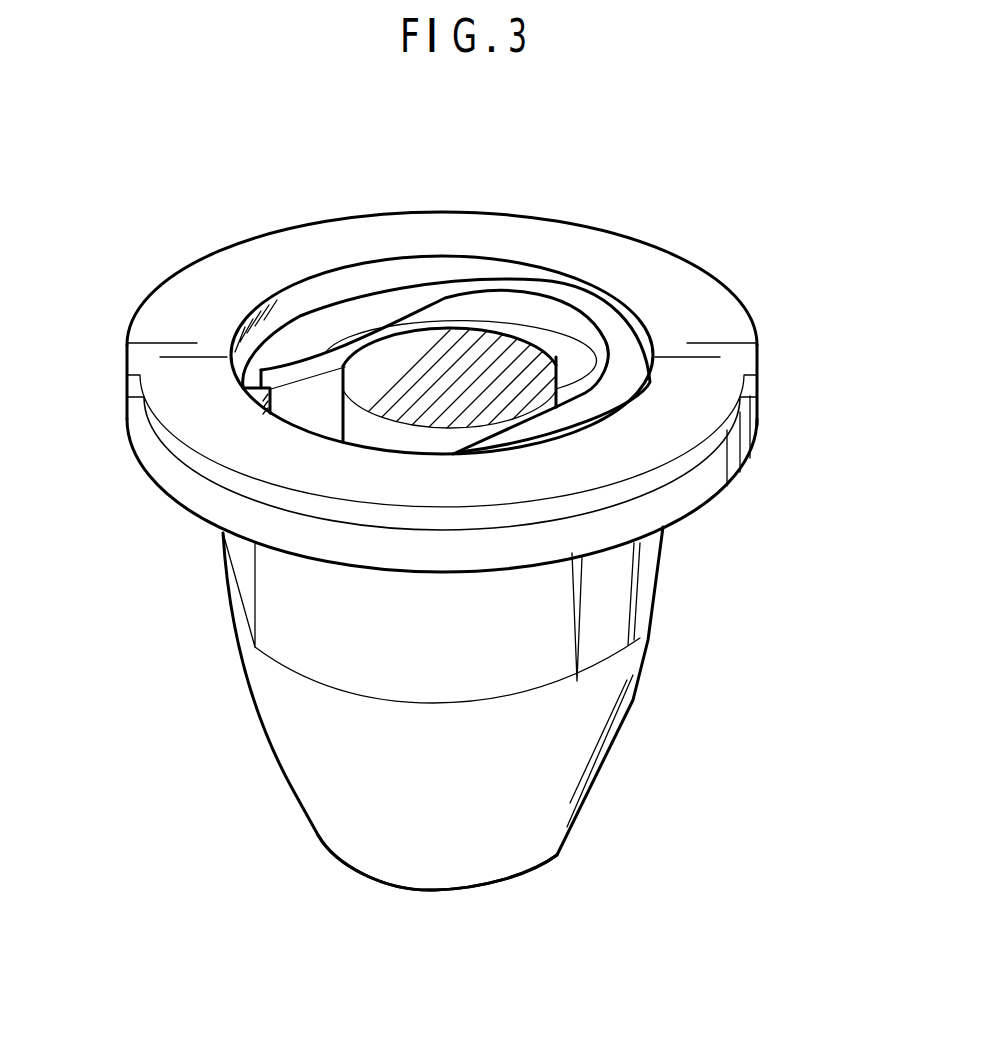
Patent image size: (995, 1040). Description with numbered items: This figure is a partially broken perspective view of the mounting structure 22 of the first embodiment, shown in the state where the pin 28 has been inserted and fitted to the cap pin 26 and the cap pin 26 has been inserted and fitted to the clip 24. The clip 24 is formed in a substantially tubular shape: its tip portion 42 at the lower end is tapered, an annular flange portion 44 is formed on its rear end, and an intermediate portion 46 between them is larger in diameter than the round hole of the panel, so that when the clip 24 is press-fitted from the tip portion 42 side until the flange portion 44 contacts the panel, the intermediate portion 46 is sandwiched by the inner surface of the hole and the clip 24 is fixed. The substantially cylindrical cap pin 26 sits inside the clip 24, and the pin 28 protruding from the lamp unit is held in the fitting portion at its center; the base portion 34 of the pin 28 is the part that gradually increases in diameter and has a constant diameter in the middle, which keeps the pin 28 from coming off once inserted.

The mounting structure 22 is at (748, 240).
The clip 24 is at (641, 686).
The cap pin 26 is at (460, 273).
The pin 28 is at (340, 367).
The base portion 34 is at (357, 428).
The tip portion 42 is at (300, 808).
The flange portion 44 is at (181, 287).
The intermediate portion 46 is at (287, 630).